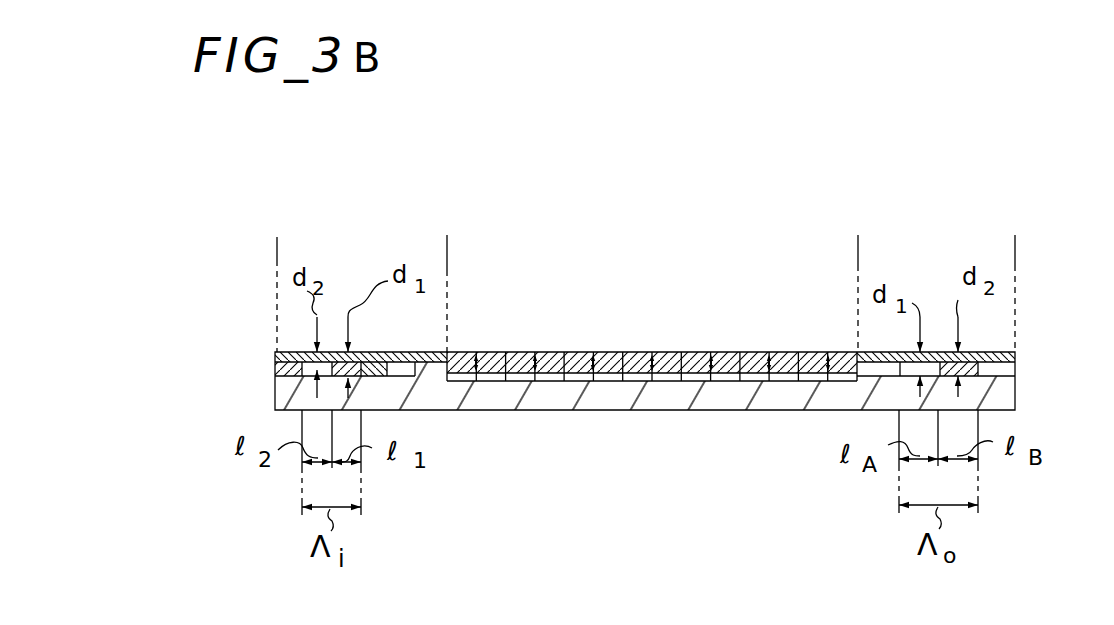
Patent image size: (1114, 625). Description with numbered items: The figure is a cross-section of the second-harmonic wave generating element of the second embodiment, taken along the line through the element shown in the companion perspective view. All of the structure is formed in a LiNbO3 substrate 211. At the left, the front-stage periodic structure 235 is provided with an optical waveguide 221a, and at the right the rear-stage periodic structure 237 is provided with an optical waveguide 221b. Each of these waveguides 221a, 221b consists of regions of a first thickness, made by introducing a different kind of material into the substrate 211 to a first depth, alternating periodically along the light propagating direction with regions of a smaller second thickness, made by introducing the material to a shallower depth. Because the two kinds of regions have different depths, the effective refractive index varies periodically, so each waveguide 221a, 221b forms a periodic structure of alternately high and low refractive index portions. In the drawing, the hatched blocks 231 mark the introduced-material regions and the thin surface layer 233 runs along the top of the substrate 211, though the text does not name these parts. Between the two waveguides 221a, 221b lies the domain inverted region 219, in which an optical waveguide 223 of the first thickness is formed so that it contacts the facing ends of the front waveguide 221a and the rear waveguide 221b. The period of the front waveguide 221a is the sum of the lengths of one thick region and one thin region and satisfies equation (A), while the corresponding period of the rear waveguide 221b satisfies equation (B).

The LiNbO3 substrate 211 is at (643, 407).
The domain inverted region 219 is at (857, 257).
The front-stage optical waveguide 221a is at (447, 248).
The rear-stage optical waveguide 221b is at (1015, 243).
The optical waveguide 223 is at (470, 392).
The grating element 231 is at (358, 365).
The cladding film 233 is at (275, 355).
The front-stage periodic structure 235 is at (365, 278).
The rear-stage periodic structure 237 is at (969, 277).